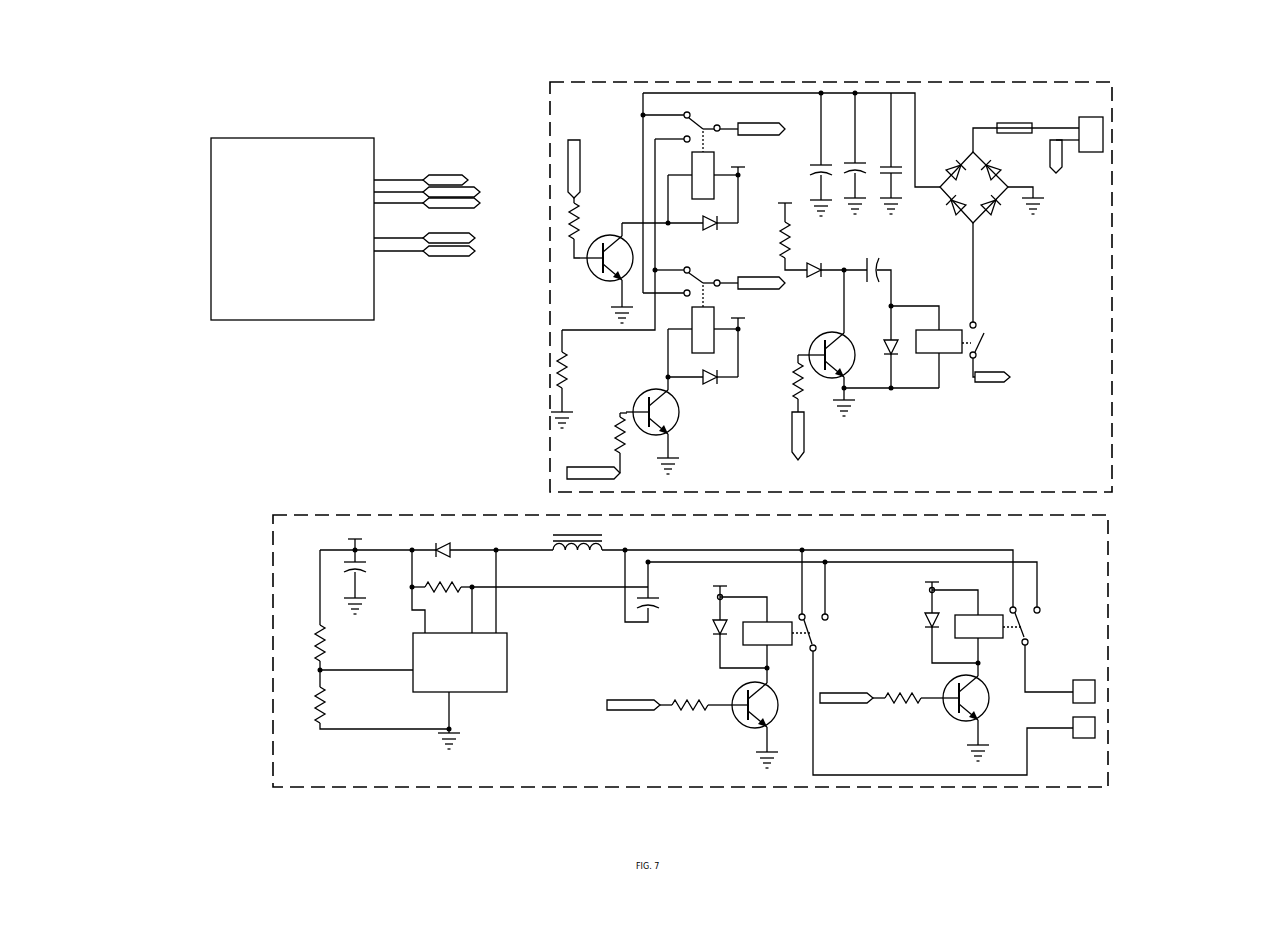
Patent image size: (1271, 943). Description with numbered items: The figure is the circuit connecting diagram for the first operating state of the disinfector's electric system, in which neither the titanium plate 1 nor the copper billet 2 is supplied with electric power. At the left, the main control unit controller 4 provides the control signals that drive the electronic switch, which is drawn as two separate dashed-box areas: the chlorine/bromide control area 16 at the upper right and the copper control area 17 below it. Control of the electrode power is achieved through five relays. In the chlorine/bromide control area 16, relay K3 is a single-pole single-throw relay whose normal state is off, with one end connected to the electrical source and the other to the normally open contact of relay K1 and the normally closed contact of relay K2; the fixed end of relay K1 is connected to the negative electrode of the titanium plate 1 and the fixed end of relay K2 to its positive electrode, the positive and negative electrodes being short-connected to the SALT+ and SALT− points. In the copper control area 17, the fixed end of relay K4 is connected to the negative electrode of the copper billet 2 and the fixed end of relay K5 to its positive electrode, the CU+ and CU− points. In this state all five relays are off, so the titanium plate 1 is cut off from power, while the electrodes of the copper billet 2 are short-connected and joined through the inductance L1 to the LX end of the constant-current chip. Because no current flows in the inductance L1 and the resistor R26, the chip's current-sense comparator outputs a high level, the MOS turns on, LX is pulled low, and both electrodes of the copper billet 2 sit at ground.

The main control unit controller 4 is at (313, 147).
The chlorine/bromide control area 16 is at (896, 260).
The copper control area 17 is at (758, 620).
The relay K1 is at (712, 264).
The relay K2 is at (716, 98).
The relay K3 is at (1008, 338).
The relay K4 is at (841, 598).
The relay K5 is at (1060, 617).
The titanium plate 1 is at (775, 128).
The copper billet 2 is at (1095, 685).
The resistor R26 is at (462, 562).
The inductance L1 is at (539, 508).